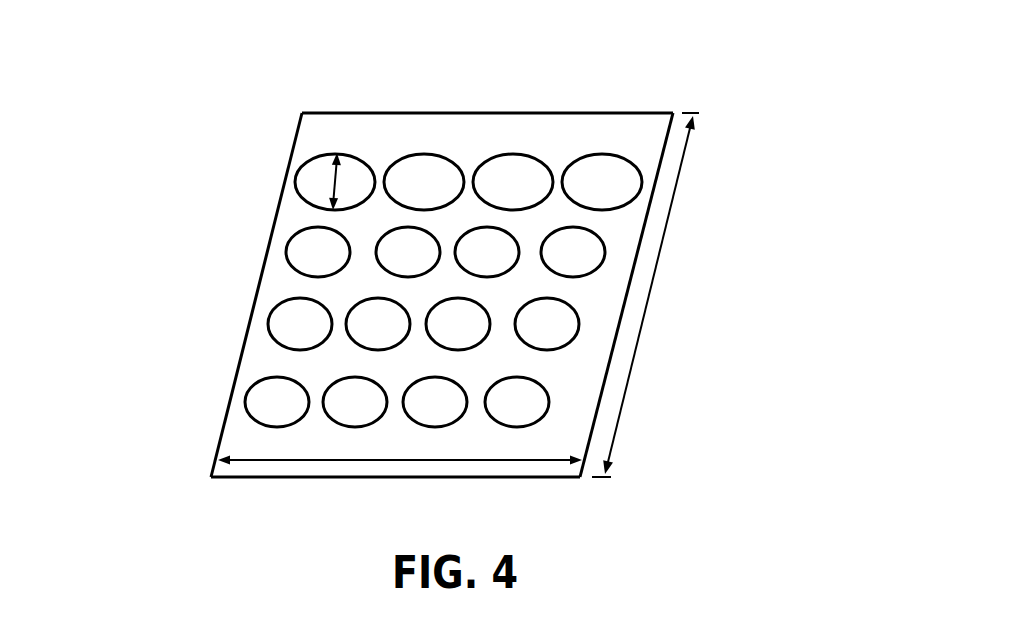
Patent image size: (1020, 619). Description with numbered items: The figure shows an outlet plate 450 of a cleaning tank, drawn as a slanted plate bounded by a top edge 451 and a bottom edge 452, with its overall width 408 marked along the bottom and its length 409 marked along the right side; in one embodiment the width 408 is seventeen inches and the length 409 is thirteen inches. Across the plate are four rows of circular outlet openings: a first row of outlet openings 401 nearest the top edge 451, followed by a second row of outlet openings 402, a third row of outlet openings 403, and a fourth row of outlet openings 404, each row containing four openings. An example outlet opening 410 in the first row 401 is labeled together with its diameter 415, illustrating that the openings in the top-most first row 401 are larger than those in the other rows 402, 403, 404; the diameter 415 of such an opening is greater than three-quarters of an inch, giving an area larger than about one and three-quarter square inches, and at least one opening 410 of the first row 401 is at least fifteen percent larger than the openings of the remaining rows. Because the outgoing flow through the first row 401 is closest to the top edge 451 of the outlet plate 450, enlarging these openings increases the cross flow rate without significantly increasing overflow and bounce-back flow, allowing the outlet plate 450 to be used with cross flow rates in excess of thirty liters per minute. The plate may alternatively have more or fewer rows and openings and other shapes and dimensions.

The first row of outlet openings 401 is at (369, 112).
The second row of outlet openings 402 is at (233, 246).
The third row of outlet openings 403 is at (222, 318).
The fourth row of outlet openings 404 is at (207, 397).
The width 408 is at (333, 461).
The length 409 is at (661, 247).
The outlet opening 410 is at (315, 155).
The diameter 415 is at (366, 125).
The outlet plate 450 is at (437, 281).
The top edge 451 is at (448, 112).
The bottom edge 452 is at (549, 481).